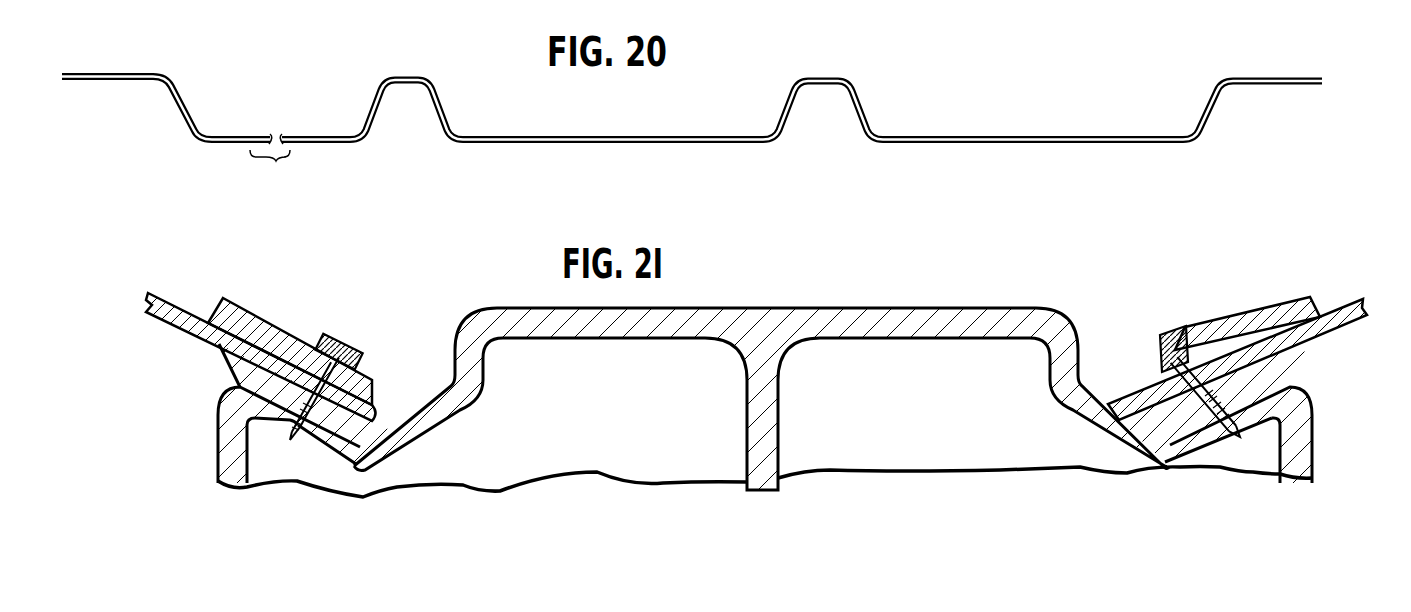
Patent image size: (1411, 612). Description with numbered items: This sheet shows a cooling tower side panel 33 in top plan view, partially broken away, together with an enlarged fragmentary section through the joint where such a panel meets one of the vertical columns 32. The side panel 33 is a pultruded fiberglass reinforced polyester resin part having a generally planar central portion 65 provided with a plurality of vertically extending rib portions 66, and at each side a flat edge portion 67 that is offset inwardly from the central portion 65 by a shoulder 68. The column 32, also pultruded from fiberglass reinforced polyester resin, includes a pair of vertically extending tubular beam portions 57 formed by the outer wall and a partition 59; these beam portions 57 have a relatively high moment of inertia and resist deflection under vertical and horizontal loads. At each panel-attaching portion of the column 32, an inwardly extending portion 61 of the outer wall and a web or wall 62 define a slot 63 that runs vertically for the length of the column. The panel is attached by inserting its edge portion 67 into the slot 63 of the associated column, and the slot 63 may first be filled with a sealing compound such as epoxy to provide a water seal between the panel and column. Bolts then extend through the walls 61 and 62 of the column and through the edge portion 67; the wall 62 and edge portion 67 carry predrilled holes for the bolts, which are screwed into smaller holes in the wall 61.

In FIG. 21, the vertical column 32 is at (905, 310).
In FIG. 20, the side panel 33 is at (977, 133).
In FIG. 21, the tubular beam portion 57 is at (527, 306).
In FIG. 21, the partition 59 is at (780, 447).
In FIG. 21, the inwardly extending portion of the outer wall 61 is at (316, 440).
In FIG. 21, the web 62 is at (252, 347).
In FIG. 21, the slot 63 is at (250, 383).
In FIG. 20, the central portion 65 is at (625, 147).
In FIG. 20, the rib portion 66 is at (380, 92).
In FIG. 20, the edge portion 67 is at (112, 72).
In FIG. 21, the edge portion 67 is at (190, 332).
In FIG. 20, the shoulder 68 is at (176, 107).